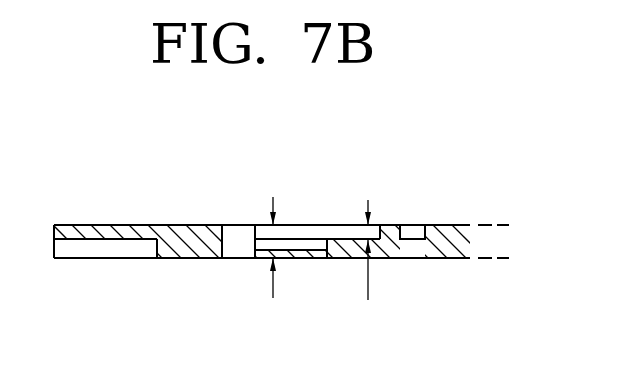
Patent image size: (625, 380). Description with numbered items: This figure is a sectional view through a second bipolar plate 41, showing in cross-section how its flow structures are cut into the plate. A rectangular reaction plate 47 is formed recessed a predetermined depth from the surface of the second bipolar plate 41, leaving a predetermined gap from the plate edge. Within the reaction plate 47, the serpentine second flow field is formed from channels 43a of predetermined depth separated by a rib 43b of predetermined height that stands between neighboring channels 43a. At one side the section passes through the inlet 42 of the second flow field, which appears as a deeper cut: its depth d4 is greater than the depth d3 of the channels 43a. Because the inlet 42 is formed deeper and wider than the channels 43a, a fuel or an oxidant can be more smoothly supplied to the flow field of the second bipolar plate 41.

The second bipolar plate 41 is at (118, 197).
The inlet of the second flow field 42 is at (238, 235).
The channels 43a is at (288, 232).
The rib 43b is at (392, 230).
The reaction plate 47 is at (400, 259).
The depth of the channels d3 is at (352, 250).
The depth of the inlet d4 is at (260, 247).